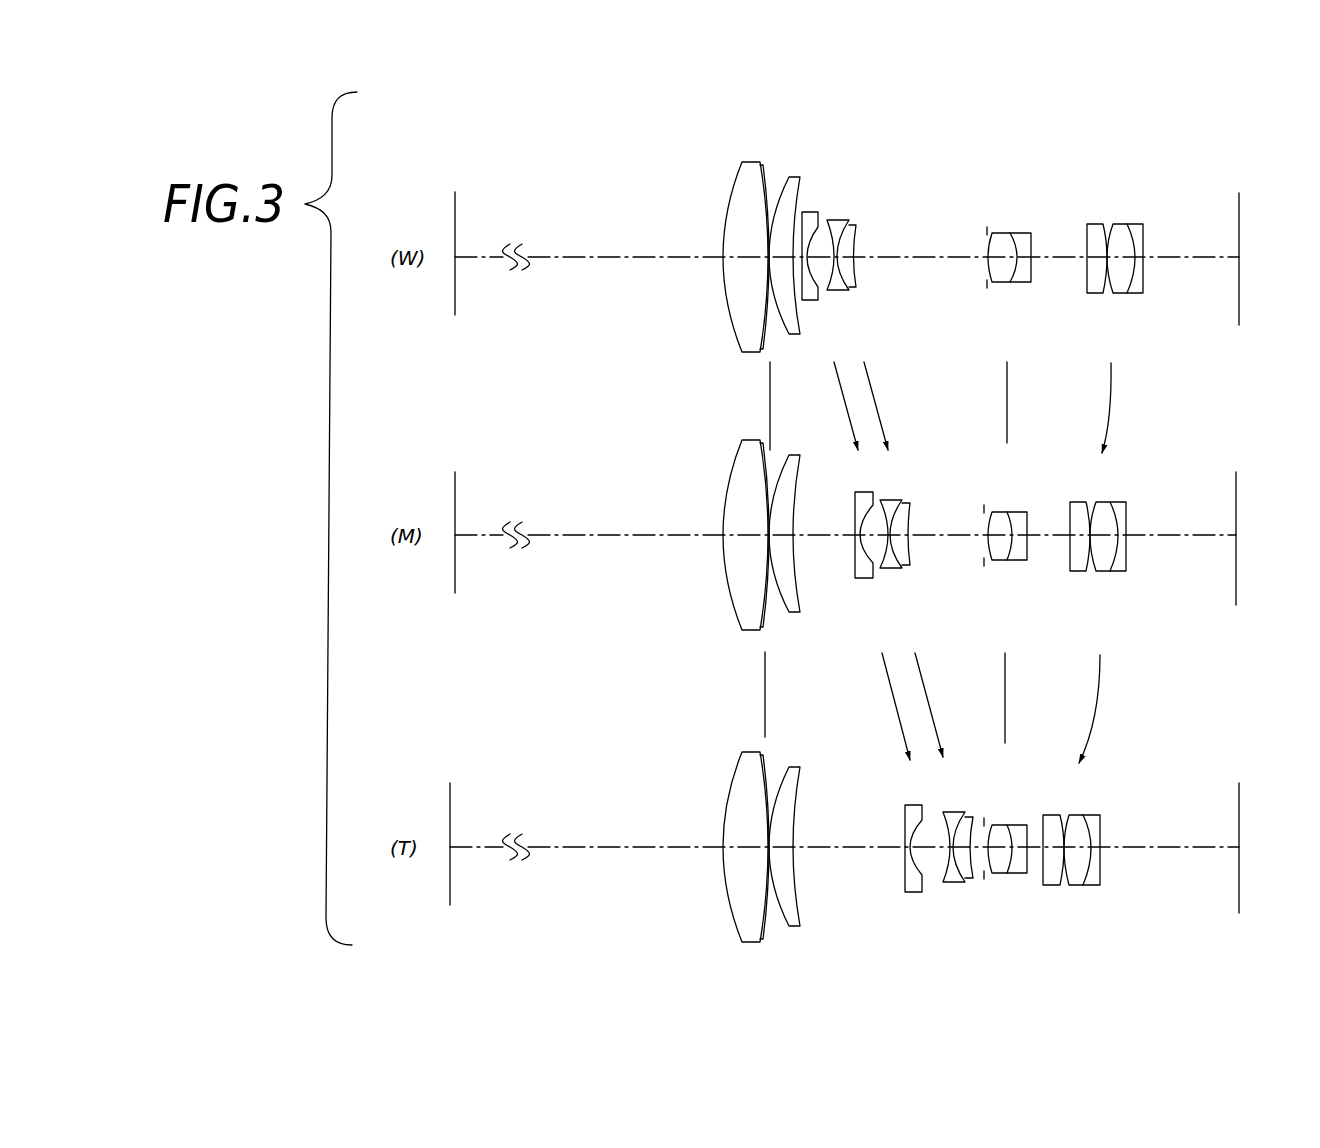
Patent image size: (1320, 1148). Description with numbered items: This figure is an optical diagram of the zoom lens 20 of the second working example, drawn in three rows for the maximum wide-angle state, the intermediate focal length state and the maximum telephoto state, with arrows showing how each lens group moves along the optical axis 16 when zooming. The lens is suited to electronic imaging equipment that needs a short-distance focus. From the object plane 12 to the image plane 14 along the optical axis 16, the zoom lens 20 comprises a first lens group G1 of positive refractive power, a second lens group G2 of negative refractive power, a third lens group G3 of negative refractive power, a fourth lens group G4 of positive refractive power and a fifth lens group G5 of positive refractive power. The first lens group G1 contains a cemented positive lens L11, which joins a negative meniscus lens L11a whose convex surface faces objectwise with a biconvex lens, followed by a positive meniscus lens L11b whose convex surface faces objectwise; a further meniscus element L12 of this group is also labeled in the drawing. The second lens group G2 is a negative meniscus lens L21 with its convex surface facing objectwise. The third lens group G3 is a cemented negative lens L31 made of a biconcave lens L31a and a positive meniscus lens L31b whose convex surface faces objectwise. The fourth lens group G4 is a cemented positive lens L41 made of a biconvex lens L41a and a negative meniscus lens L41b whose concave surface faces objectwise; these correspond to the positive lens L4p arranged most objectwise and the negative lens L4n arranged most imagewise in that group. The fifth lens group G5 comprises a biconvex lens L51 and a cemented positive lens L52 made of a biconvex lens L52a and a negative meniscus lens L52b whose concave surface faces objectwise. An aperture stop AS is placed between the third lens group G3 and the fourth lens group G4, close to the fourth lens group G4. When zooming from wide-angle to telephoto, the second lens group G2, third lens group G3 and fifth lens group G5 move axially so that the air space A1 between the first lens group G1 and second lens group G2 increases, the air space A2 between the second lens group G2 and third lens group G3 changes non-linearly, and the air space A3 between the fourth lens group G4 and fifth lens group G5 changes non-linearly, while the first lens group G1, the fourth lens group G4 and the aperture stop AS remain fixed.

The object plane 12 is at (455, 312).
The image plane 14 is at (1239, 202).
The optical axis 16 is at (1205, 259).
The zoom lens 20 is at (866, 141).
The first lens group G1 is at (812, 157).
The second lens group G2 is at (820, 197).
The third lens group G3 is at (857, 215).
The fourth lens group G4 is at (1023, 202).
The fifth lens group G5 is at (1148, 205).
The aperture stop AS is at (986, 231).
The air space A1 is at (806, 306).
The air space A2 is at (828, 302).
The air space A3 is at (1053, 274).
The cemented positive lens L11 is at (703, 560).
The negative meniscus lens L11a is at (740, 633).
The positive meniscus lens L11b is at (756, 632).
The meniscus lens of first group L12 is at (793, 613).
The negative meniscus lens L21 is at (867, 580).
The cemented negative lens L31 is at (934, 555).
The biconcave lens L31a is at (892, 570).
The positive meniscus lens L31b is at (910, 568).
The cemented positive lens L41 is at (1014, 522).
The biconvex lens L41a is at (982, 530).
The negative meniscus lens L41b is at (1036, 542).
The positive lens L4p is at (1000, 562).
The negative lens L4n is at (1014, 562).
The biconvex lens L51 is at (1073, 500).
The cemented positive lens L52 is at (1121, 561).
The biconvex lens L52a is at (1102, 572).
The negative meniscus lens L52b is at (1115, 572).